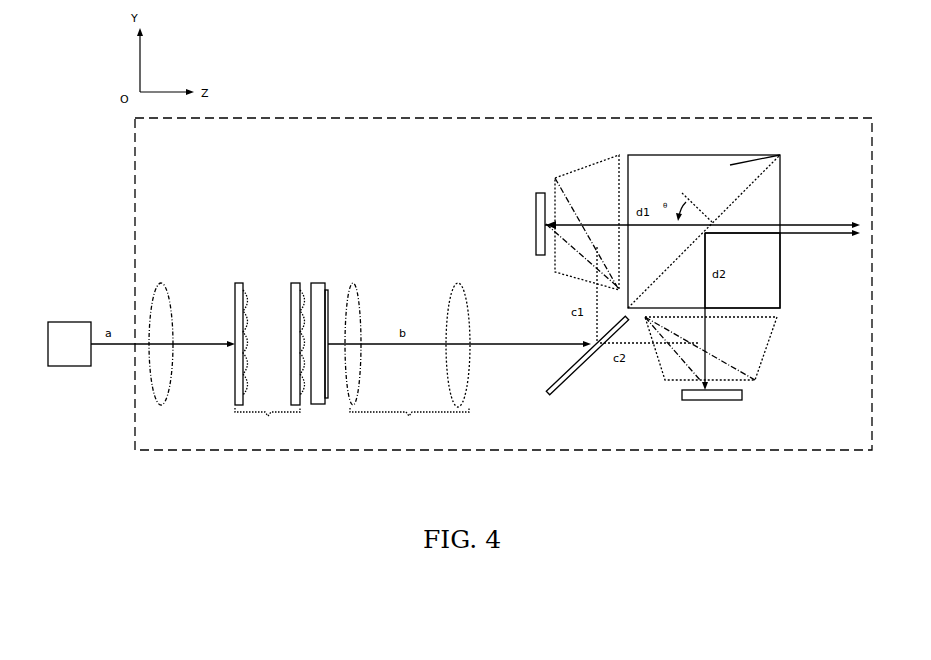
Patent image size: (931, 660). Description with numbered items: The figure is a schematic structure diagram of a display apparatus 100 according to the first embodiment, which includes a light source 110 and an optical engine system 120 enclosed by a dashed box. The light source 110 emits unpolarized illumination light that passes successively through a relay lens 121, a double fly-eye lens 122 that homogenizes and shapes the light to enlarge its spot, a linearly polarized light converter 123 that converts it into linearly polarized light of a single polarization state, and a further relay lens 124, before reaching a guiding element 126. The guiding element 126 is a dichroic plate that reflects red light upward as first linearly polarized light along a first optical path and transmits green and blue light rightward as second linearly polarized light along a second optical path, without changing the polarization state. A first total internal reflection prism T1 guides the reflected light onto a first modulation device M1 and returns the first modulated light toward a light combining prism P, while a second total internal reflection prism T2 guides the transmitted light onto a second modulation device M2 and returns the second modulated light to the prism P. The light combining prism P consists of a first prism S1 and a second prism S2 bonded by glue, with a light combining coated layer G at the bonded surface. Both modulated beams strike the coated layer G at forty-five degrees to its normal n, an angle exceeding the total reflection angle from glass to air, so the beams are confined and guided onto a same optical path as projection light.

The display apparatus 100 is at (553, 40).
The light source 110 is at (70, 321).
The optical engine system 120 is at (377, 118).
The relay lens 121 is at (162, 286).
The double fly-eye lens 122 is at (270, 359).
The linearly polarized light converter 123 is at (318, 283).
The relay lens 124 is at (407, 363).
The guiding element 126 is at (562, 377).
The first modulation device M1 is at (536, 222).
The second modulation device M2 is at (680, 395).
The first total internal reflection prism T1 is at (586, 166).
The second total internal reflection prism T2 is at (768, 348).
The light combining prism P is at (688, 156).
The first prism S1 is at (731, 165).
The second prism S2 is at (773, 265).
The light combining coated layer G is at (698, 210).
The normal n is at (698, 210).